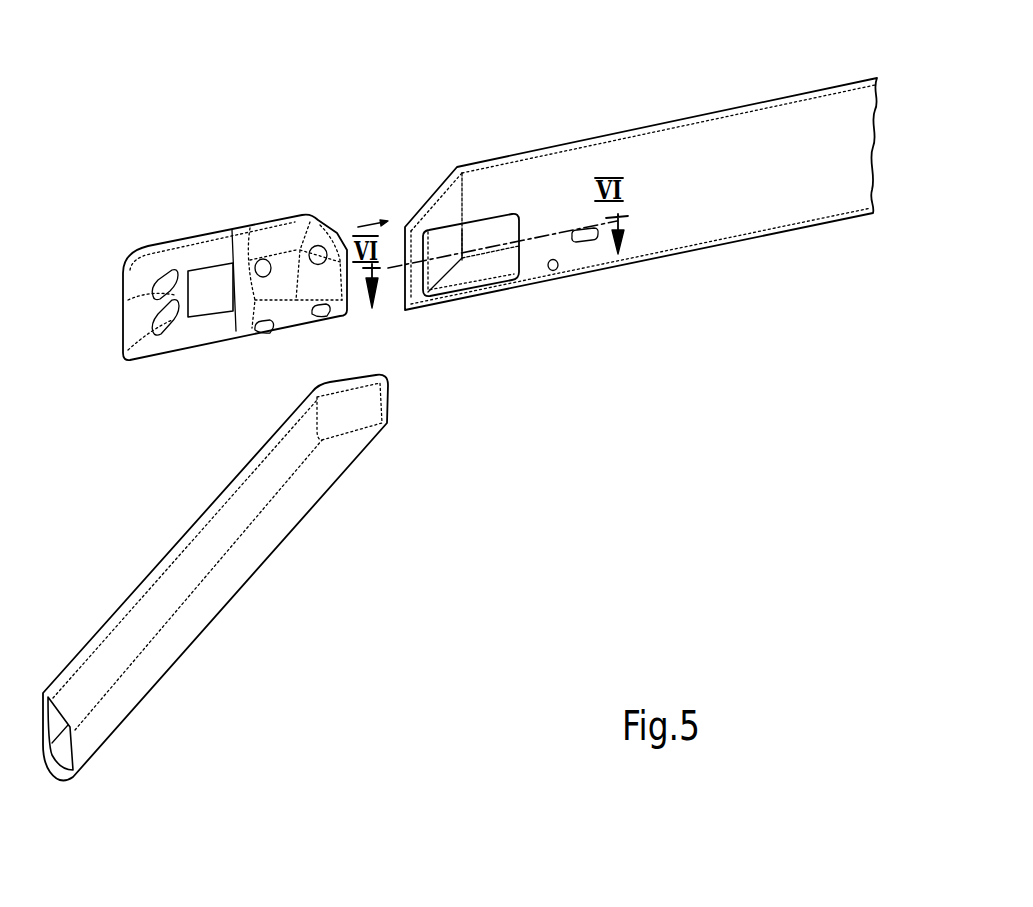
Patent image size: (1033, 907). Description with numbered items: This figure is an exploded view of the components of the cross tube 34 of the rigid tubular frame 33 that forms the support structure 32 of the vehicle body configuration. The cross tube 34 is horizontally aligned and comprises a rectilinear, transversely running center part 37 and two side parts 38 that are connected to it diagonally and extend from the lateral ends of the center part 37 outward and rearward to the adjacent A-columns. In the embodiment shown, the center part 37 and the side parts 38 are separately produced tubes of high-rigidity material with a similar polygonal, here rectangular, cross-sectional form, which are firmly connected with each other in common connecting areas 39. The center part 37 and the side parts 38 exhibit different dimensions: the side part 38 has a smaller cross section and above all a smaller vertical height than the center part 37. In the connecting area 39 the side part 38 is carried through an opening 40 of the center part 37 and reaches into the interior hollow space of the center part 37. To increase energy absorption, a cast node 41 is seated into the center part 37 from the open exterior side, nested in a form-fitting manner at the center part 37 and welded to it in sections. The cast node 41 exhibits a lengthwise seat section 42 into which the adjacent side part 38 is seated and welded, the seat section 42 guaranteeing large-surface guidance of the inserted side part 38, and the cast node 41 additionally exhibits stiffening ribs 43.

The support structure 32 is at (540, 99).
The rigid tubular frame 33 is at (711, 106).
The cross tube 34 is at (462, 382).
The center part 37 is at (797, 210).
The side part 38 is at (240, 560).
The connecting area 39 is at (411, 198).
The opening 40 is at (487, 270).
The cast node 41 is at (233, 224).
The seat section 42 is at (212, 300).
The stiffening rib 43 is at (287, 257).